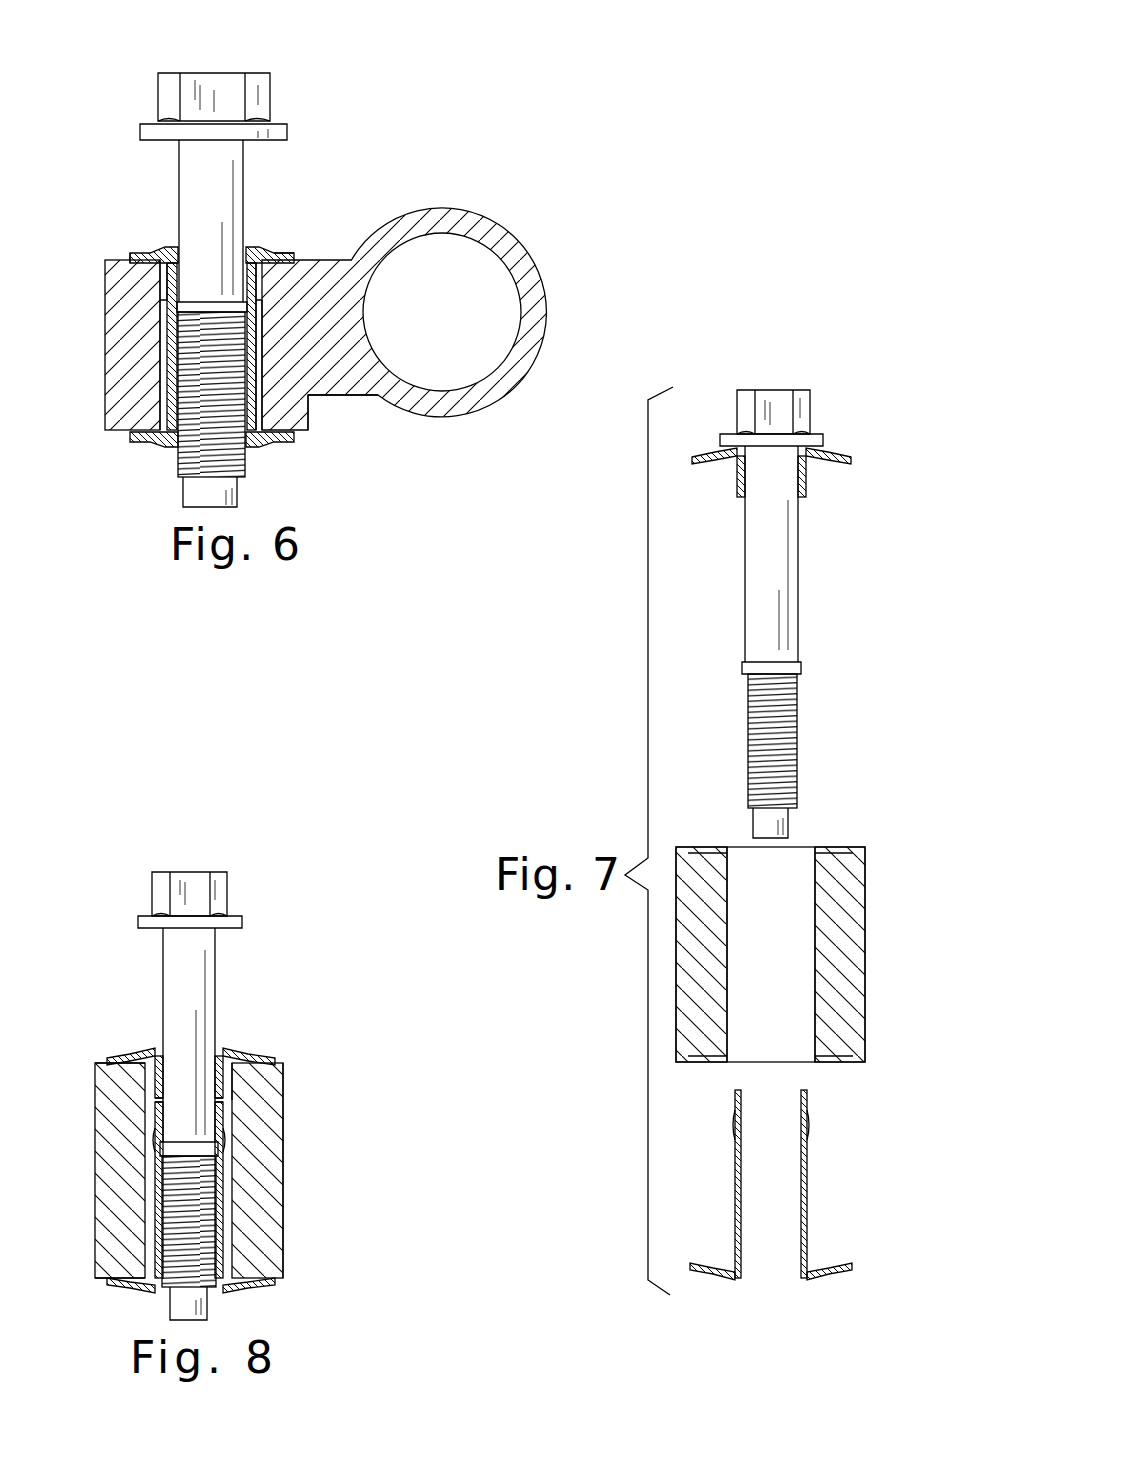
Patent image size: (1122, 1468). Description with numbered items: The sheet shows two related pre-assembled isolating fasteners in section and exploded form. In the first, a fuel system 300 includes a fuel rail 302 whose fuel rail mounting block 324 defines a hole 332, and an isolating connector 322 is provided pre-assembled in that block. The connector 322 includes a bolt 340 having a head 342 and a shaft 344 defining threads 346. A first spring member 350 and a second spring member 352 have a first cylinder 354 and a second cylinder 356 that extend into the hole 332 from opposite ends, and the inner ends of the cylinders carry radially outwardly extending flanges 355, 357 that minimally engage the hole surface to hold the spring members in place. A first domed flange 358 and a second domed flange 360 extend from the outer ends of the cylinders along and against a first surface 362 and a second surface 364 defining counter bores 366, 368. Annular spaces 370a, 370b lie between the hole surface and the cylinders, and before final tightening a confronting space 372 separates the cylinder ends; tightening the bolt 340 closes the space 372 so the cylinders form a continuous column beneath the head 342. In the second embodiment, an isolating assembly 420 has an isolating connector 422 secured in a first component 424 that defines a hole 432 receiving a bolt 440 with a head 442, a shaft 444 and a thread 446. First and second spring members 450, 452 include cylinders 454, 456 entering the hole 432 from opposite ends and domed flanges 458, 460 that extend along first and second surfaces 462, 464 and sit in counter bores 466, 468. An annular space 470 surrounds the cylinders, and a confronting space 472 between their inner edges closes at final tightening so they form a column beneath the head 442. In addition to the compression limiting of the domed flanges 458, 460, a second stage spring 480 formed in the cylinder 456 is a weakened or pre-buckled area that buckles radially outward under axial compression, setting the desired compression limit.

In FIG. 6, the fuel system 300 is at (383, 133).
In FIG. 6, the fuel rail 302 is at (445, 213).
In FIG. 6, the isolating connector 322 is at (160, 470).
In FIG. 6, the fuel rail mounting block 324 is at (122, 355).
In FIG. 6, the hole 332 is at (302, 413).
In FIG. 6, the bolt 340 is at (142, 106).
In FIG. 6, the head 342 is at (262, 96).
In FIG. 6, the shaft 344 is at (192, 158).
In FIG. 6, the threads 346 is at (232, 457).
In FIG. 6, the first spring member 350 is at (257, 224).
In FIG. 6, the second spring member 352 is at (146, 449).
In FIG. 6, the first cylinder 354 is at (289, 256).
In FIG. 6, the flange 355 is at (160, 284).
In FIG. 6, the second cylinder 356 is at (257, 360).
In FIG. 6, the flange 357 is at (168, 302).
In FIG. 6, the first domed flange 358 is at (268, 243).
In FIG. 6, the second domed flange 360 is at (283, 440).
In FIG. 6, the first surface 362 is at (117, 253).
In FIG. 6, the second surface 364 is at (128, 436).
In FIG. 6, the counter bore 366 is at (252, 290).
In FIG. 6, the counter bore 368 is at (143, 420).
In FIG. 6, the annular space 370a is at (130, 266).
In FIG. 6, the annular space 370b is at (257, 333).
In FIG. 6, the confronting space 372 is at (247, 312).
In FIG. 8, the isolating assembly 420 is at (273, 896).
In FIG. 8, the isolating connector 422 is at (242, 996).
In FIG. 8, the first component 424 is at (272, 1125).
In FIG. 7, the first component 424 is at (790, 937).
In FIG. 8, the hole 432 is at (284, 1080).
In FIG. 7, the hole 432 is at (740, 1063).
In FIG. 8, the bolt 440 is at (190, 866).
In FIG. 7, the bolt 440 is at (770, 382).
In FIG. 8, the head 442 is at (158, 892).
In FIG. 7, the head 442 is at (805, 402).
In FIG. 8, the shaft 444 is at (182, 941).
In FIG. 7, the shaft 444 is at (782, 570).
In FIG. 8, the thread 446 is at (196, 1262).
In FIG. 7, the thread 446 is at (781, 731).
In FIG. 8, the first spring member 450 is at (140, 1045).
In FIG. 7, the first spring member 450 is at (710, 470).
In FIG. 8, the second spring member 452 is at (140, 1293).
In FIG. 7, the second spring member 452 is at (820, 1170).
In FIG. 8, the cylinder 454 is at (153, 1092).
In FIG. 7, the cylinder 454 is at (810, 484).
In FIG. 8, the cylinder 456 is at (155, 1200).
In FIG. 7, the cylinder 456 is at (806, 1211).
In FIG. 8, the domed flange 458 is at (243, 1050).
In FIG. 7, the domed flange 458 is at (832, 452).
In FIG. 8, the domed flange 460 is at (236, 1291).
In FIG. 7, the domed flange 460 is at (823, 1277).
In FIG. 8, the first surface 462 is at (107, 1060).
In FIG. 7, the first surface 462 is at (682, 847).
In FIG. 8, the second surface 464 is at (279, 1290).
In FIG. 8, the counter bore 466 is at (122, 1079).
In FIG. 7, the counter bore 466 is at (845, 847).
In FIG. 8, the counter bore 468 is at (127, 1273).
In FIG. 7, the counter bore 468 is at (838, 1063).
In FIG. 8, the annular space 470 is at (226, 1204).
In FIG. 8, the confronting space 472 is at (224, 1100).
In FIG. 8, the second stage spring 480 is at (222, 1140).
In FIG. 7, the second stage spring 480 is at (737, 1123).